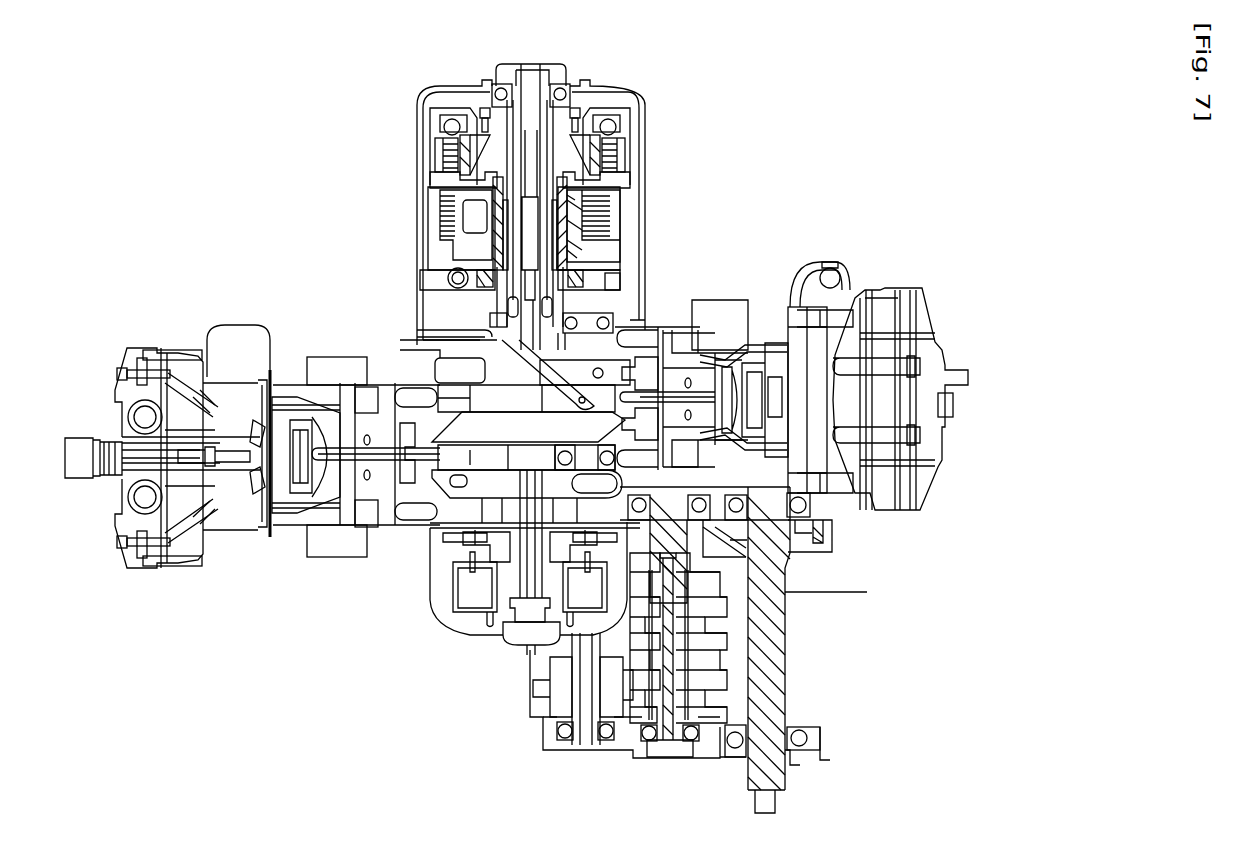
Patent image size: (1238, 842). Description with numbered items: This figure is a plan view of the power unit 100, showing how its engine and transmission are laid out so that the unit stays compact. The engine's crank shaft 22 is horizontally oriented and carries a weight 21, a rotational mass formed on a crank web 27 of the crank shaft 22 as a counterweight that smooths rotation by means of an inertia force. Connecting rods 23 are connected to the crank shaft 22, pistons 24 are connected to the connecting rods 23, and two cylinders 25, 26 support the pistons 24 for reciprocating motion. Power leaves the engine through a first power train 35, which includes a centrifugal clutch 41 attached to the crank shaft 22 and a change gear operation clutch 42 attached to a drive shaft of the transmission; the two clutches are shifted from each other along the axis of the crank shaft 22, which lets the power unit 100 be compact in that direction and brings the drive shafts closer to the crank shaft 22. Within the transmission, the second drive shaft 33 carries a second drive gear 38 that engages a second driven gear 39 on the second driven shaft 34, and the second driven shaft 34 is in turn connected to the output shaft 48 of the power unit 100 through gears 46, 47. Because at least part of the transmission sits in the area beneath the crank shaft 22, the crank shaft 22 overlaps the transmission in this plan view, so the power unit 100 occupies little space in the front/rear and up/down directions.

The power unit 100 is at (815, 160).
The first power train 35 is at (400, 184).
The centrifugal clutch 41 is at (637, 128).
The change gear operation clutch 42 is at (641, 150).
The weight 21 is at (433, 370).
The crank shaft 22 is at (510, 518).
The connecting rods 23 is at (672, 332).
The pistons 24 is at (770, 308).
The cylinder 25 is at (315, 400).
The cylinder 26 is at (722, 340).
The crank web 27 is at (450, 484).
The second drive shaft 33 is at (560, 655).
The second driven shaft 34 is at (677, 684).
The second drive gear 38 is at (545, 690).
The second driven gear 39 is at (710, 690).
The gear 46 is at (785, 588).
The gear 47 is at (807, 546).
The output shaft 48 is at (775, 640).